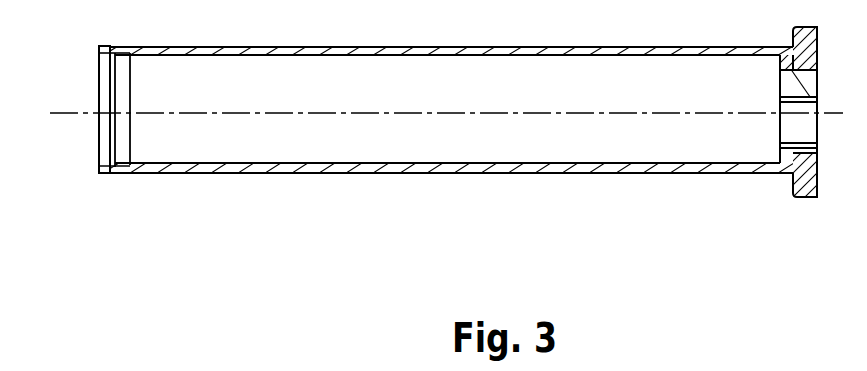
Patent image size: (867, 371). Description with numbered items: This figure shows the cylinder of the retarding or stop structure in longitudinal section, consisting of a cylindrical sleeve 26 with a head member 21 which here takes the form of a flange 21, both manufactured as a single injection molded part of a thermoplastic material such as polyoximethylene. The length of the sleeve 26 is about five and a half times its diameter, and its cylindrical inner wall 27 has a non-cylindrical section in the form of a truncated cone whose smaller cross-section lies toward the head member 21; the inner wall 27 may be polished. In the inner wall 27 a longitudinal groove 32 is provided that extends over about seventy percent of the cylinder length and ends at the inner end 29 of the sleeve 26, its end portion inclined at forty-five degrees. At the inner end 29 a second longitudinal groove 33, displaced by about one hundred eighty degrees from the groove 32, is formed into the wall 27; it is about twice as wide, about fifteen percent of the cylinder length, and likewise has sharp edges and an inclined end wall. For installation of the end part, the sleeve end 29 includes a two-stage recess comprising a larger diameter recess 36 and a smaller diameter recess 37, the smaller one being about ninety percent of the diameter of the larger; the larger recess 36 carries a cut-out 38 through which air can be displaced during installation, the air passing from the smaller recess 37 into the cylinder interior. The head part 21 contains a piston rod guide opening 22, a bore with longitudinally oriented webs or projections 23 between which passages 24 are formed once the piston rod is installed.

The head member 21 is at (808, 175).
The piston rod guide opening 22 is at (768, 188).
The projections 23 is at (780, 102).
The passages 24 is at (788, 83).
The sleeve 26 is at (424, 164).
The inner wall 27 is at (300, 203).
The inner end 29 is at (132, 161).
The longitudinal groove 32 is at (287, 58).
The longitudinal groove 33 is at (223, 203).
The larger diameter recess 36 is at (78, 165).
The smaller diameter recess 37 is at (94, 165).
The cut-out 38 is at (117, 170).